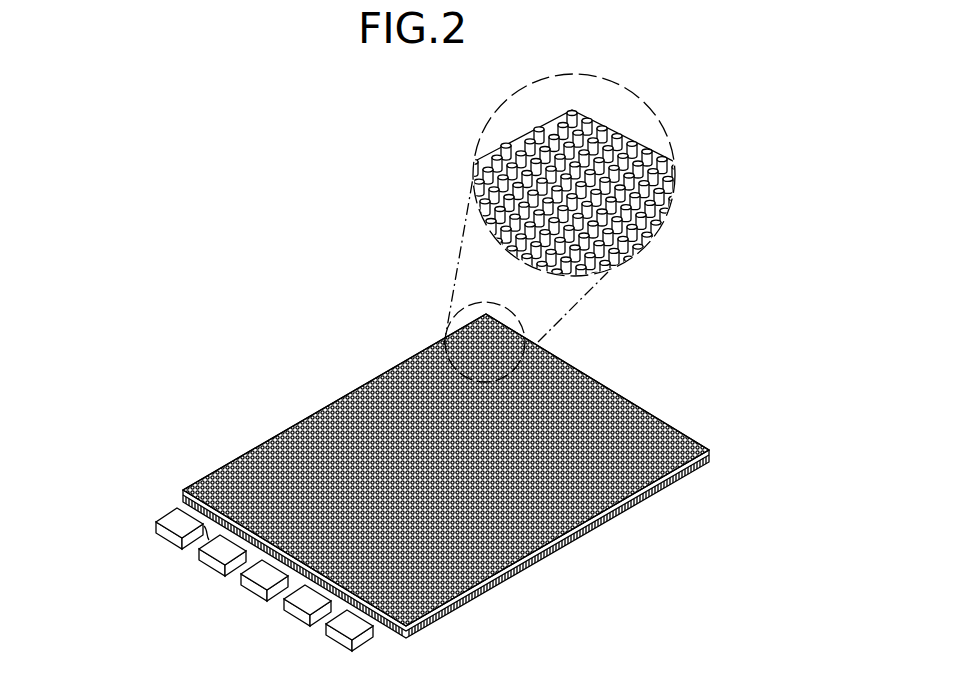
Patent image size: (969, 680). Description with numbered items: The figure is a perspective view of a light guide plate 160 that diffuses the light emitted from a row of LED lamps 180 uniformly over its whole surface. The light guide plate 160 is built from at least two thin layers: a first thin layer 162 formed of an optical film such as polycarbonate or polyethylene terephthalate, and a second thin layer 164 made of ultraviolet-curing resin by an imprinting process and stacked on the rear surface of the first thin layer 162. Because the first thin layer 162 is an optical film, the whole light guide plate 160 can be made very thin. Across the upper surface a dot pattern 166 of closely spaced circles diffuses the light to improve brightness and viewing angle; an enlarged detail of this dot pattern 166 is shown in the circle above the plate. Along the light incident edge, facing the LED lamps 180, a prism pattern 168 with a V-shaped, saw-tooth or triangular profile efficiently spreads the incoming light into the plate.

The light guide plate 160 is at (592, 563).
The first thin layer 162 is at (180, 492).
The second thin layer 164 is at (178, 500).
The dot pattern 166 is at (658, 176).
The prism pattern 168 is at (204, 528).
The LED lamps 180 is at (155, 525).